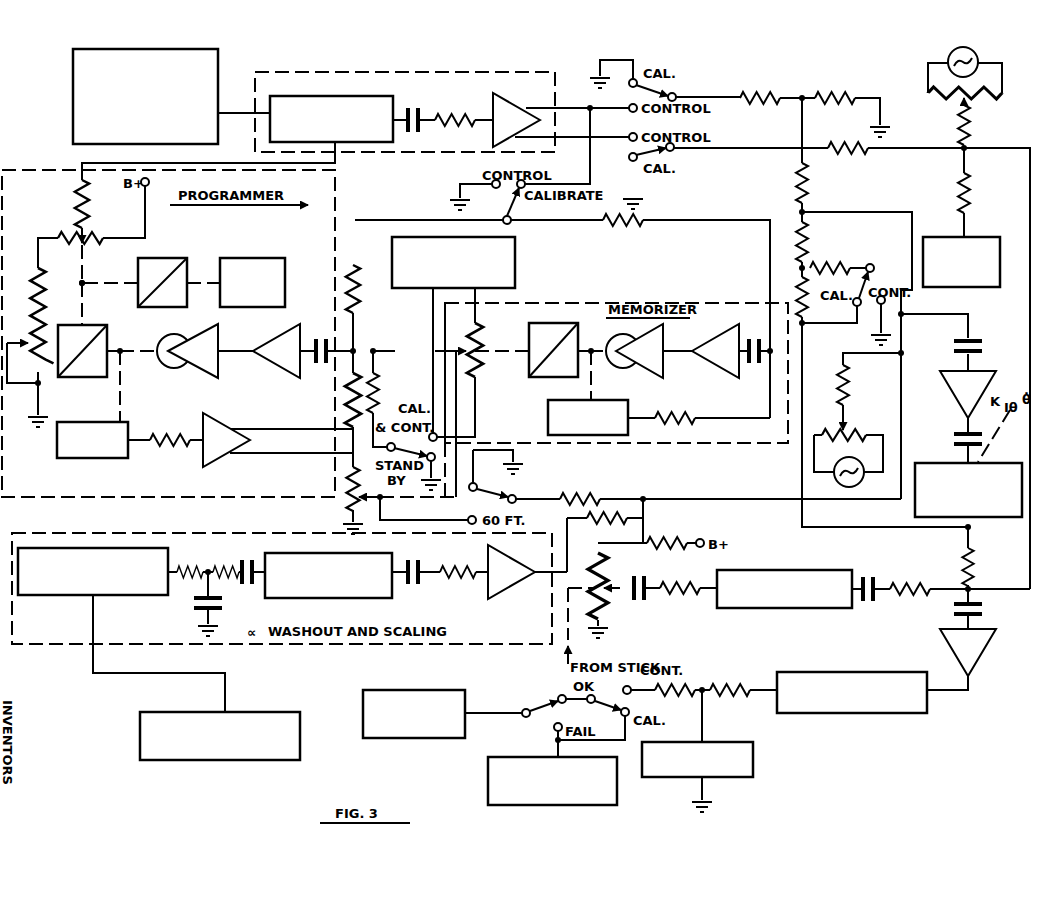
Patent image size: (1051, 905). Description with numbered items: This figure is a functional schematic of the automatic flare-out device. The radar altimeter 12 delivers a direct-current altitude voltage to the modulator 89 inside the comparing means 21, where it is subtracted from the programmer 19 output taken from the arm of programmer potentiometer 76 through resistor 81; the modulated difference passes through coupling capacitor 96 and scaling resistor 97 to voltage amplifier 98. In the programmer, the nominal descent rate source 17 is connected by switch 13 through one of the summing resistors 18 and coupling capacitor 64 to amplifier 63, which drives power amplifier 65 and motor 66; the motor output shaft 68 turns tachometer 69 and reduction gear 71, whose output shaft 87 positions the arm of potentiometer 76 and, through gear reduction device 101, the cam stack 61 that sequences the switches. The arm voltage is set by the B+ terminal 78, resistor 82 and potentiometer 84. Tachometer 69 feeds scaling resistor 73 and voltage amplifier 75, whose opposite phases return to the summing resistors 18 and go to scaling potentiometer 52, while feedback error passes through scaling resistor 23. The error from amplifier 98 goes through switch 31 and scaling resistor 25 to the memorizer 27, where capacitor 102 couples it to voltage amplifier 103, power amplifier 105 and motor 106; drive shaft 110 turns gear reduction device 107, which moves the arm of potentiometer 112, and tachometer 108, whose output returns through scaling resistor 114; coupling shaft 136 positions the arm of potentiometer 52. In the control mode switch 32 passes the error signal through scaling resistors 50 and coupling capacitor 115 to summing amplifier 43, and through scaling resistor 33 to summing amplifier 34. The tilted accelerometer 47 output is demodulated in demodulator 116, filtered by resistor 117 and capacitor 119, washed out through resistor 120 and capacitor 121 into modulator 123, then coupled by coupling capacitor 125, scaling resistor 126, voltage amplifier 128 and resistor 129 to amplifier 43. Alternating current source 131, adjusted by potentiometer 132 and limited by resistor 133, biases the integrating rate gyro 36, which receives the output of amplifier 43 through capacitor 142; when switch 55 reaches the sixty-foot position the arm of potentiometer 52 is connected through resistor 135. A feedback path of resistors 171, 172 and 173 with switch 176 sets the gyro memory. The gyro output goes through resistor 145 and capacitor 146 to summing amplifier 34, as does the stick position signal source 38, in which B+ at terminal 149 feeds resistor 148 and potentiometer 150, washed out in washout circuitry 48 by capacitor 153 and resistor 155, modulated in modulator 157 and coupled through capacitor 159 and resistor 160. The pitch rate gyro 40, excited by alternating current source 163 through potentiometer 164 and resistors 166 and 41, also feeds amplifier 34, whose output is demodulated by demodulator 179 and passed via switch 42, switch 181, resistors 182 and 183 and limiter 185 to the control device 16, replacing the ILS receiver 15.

The radar altimeter 12 is at (203, 68).
The comparing means 21 is at (352, 70).
The modulator 89 is at (337, 105).
The coupling capacitor 96 is at (418, 106).
The scaling resistor 97 is at (458, 106).
The voltage amplifier 98 is at (508, 108).
The switch 32 is at (677, 77).
The scaling resistors 50 is at (750, 95).
The alternating current source 163 is at (978, 56).
The potentiometer 164 is at (984, 98).
The resistor 166 is at (974, 131).
The scaling resistor 33 is at (856, 157).
The scaling resistor 41 is at (969, 196).
The pitch rate gyro 40 is at (988, 246).
The programmer 19 is at (340, 200).
The resistor 81 is at (77, 210).
The programmer potentiometer 76 is at (85, 232).
The terminal 78 is at (149, 183).
The output shaft 87 is at (83, 281).
The resistor 82 is at (41, 296).
The potentiometer 84 is at (42, 368).
The gear reduction device 101 is at (165, 268).
The cam stack 61 is at (272, 260).
The reduction gear 71 is at (88, 330).
The motor output shaft 68 is at (132, 347).
The motor 66 is at (170, 342).
The power amplifier 65 is at (214, 352).
The amplifier 63 is at (302, 327).
The coupling capacitor 64 is at (322, 373).
The tachometer 69 is at (128, 427).
The scaling resistor 73 is at (166, 423).
The voltage amplifier 75 is at (213, 423).
The nominal descent rate source 17 is at (505, 259).
The scaling resistor 23 is at (357, 290).
The summing resistors 18 is at (378, 392).
The switch 31 is at (505, 208).
The scaling resistor 25 is at (620, 228).
The memorizer 27 is at (650, 302).
The gear reduction device 107 is at (557, 322).
The drive shaft 110 is at (600, 348).
The potentiometer 112 is at (480, 342).
The coupling shaft 136 is at (460, 398).
The motor 106 is at (612, 360).
The tachometer 108 is at (598, 406).
The power amplifier 105 is at (650, 370).
The voltage amplifier 103 is at (720, 322).
The capacitor 102 is at (760, 338).
The scaling resistor 114 is at (680, 410).
The resistor 173 is at (808, 240).
The resistor 172 is at (836, 262).
The switch 176 is at (880, 265).
The resistor 171 is at (841, 302).
The resistor 133 is at (850, 390).
The potentiometer 132 is at (860, 431).
The alternating current source 131 is at (862, 480).
The coupling capacitor 115 is at (984, 341).
The summing amplifier 43 is at (984, 376).
The capacitor 142 is at (957, 432).
The integrating rate gyro 36 is at (950, 462).
The switch 13 is at (425, 457).
The switch 55 is at (497, 494).
The resistor 135 is at (577, 490).
The scaling potentiometer 52 is at (347, 481).
The resistor 129 is at (596, 522).
The resistor 148 is at (684, 527).
The terminal 149 is at (720, 540).
The potentiometer 150 is at (593, 567).
The stick position signal source 38 is at (648, 565).
The capacitor 153 is at (648, 587).
The resistor 155 is at (687, 583).
The modulator 157 is at (775, 575).
The capacitor 159 is at (867, 573).
The resistor 160 is at (903, 582).
The resistor 145 is at (973, 568).
The coupling capacitor 146 is at (982, 603).
The summing amplifier 34 is at (977, 642).
The demodulator 179 is at (908, 678).
The resistor 183 is at (680, 677).
The resistor 182 is at (738, 683).
The limiter 185 is at (748, 753).
The control device 16 is at (412, 695).
The switch 181 is at (543, 705).
The switch 42 is at (603, 702).
The ILS receiver 15 is at (498, 777).
The tilted accelerometer 47 is at (275, 727).
The demodulator 116 is at (128, 548).
The resistor 117 is at (187, 570).
The resistor 120 is at (220, 567).
The capacitor 121 is at (252, 585).
The capacitor 119 is at (197, 602).
The modulator 123 is at (340, 593).
The coupling capacitor 125 is at (418, 570).
The scaling resistor 126 is at (455, 573).
The voltage amplifier 128 is at (508, 559).
The washout circuitry 48 is at (351, 648).